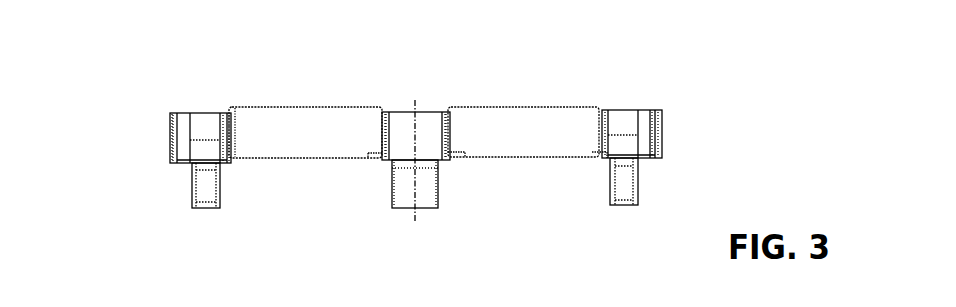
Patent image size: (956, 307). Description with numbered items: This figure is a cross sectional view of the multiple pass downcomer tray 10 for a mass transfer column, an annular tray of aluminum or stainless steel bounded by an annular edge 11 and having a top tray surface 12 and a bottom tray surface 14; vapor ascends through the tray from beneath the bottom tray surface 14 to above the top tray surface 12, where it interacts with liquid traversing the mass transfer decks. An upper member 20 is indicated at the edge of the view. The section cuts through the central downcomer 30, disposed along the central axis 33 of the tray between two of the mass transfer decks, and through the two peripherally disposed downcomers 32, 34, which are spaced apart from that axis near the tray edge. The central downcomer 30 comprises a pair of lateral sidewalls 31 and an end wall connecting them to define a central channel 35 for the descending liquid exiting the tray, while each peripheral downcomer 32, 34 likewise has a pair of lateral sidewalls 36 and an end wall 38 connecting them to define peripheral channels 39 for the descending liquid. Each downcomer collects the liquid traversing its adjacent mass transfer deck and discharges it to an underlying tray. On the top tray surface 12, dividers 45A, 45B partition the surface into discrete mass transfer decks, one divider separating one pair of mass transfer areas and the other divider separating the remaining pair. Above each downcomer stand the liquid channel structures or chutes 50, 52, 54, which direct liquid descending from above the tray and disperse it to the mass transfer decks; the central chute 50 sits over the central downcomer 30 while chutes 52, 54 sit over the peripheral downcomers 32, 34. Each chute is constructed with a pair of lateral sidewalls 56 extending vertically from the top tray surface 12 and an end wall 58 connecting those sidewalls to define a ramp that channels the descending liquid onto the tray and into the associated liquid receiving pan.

The multiple pass downcomer tray 10 is at (70, 67).
The annular edge 11 is at (662, 160).
The top tray surface 12 is at (541, 131).
The bottom tray surface 14 is at (523, 177).
The upper member 20 is at (505, 1).
The central downcomer 30 is at (427, 195).
The lateral sidewalls 31 is at (397, 195).
The first peripherally disposed downcomer 32 is at (628, 187).
The end wall 33 is at (407, 210).
The second peripherally disposed downcomer 34 is at (208, 193).
The central channel 35 is at (405, 175).
The lateral sidewalls 36 is at (193, 190).
The end wall 38 is at (203, 203).
The peripheral channels 39 is at (208, 177).
The divider 45A is at (523, 141).
The divider 45B is at (297, 142).
The chute 50 is at (440, 128).
The chute 52 is at (638, 135).
The chute 54 is at (207, 130).
The lateral sidewalls 56 is at (170, 135).
The end wall 58 is at (416, 140).